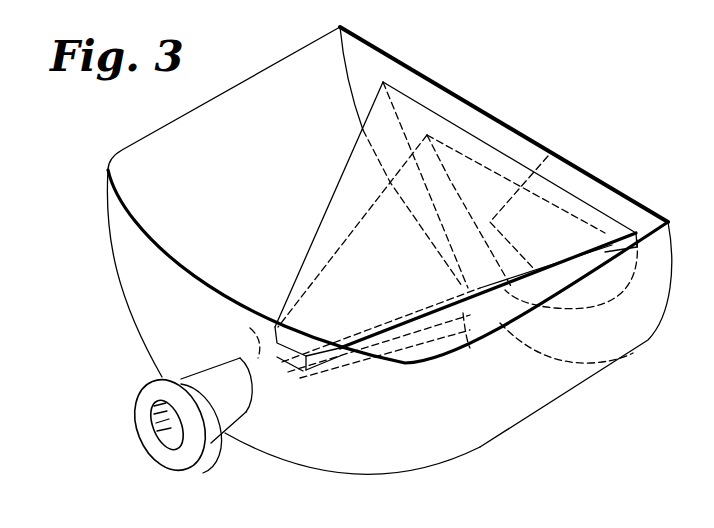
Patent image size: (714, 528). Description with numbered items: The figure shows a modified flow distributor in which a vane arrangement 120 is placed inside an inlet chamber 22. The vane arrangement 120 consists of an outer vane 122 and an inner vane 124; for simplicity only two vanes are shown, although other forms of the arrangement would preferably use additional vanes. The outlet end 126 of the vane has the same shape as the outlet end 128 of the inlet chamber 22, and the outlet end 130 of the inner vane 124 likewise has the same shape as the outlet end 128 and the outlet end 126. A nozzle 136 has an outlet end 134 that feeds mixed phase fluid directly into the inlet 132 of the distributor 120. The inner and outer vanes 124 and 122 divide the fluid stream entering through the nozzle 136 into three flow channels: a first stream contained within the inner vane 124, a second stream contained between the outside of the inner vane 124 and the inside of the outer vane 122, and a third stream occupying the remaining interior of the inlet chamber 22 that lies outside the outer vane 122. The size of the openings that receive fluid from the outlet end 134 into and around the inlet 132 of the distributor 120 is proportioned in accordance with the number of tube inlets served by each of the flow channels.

The inlet chamber 22 is at (221, 174).
The vane arrangement 120 is at (402, 377).
The outer vane 122 is at (360, 130).
The inner vane 124 is at (470, 348).
The vane outlet end 126 is at (458, 127).
The outlet end of inlet chamber 128 is at (596, 178).
The outlet end of inner vane 130 is at (548, 156).
The inlet of distributor 132 is at (293, 373).
The outlet end of nozzle 134 is at (250, 328).
The nozzle 136 is at (210, 447).